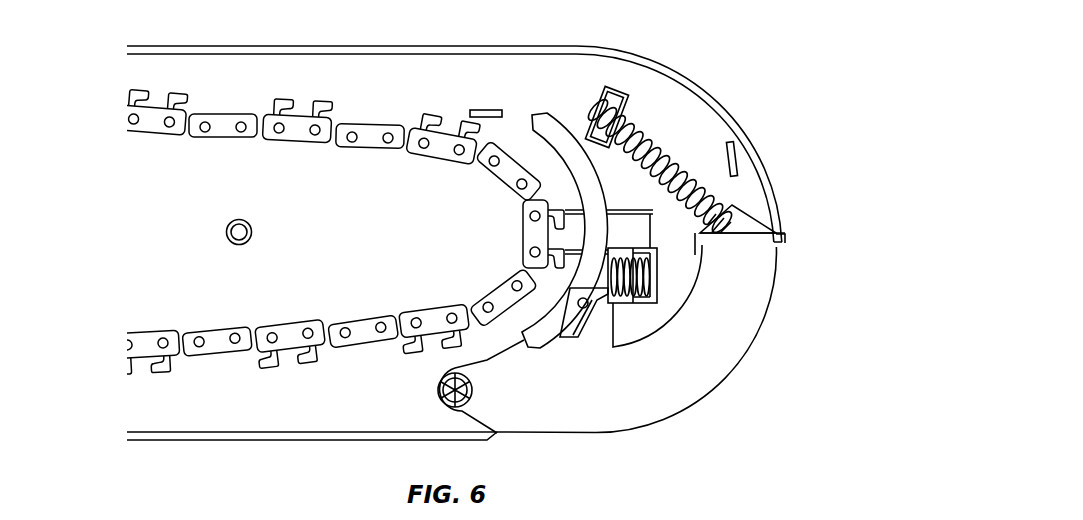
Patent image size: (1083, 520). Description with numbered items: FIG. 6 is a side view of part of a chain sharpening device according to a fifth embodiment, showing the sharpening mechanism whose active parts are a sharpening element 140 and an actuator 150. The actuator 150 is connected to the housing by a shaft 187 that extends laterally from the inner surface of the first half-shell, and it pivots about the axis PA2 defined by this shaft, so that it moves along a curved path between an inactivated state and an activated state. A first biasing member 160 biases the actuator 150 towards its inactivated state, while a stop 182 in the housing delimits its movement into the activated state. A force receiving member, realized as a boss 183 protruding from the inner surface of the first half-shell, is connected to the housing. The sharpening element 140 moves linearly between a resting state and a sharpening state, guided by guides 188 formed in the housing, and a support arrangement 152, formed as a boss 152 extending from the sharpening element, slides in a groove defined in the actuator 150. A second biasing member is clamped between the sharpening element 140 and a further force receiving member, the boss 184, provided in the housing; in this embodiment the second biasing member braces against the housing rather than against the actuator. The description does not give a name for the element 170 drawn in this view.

The sharpening element 140 is at (546, 112).
The actuator 150 is at (742, 245).
The boss 152 is at (590, 302).
The first biasing member 160 is at (648, 137).
The latch spring 170 is at (640, 283).
The stop 182 is at (740, 157).
The force receiving member 183 is at (628, 104).
The force receiving member 184 is at (655, 263).
The shaft 187 is at (472, 393).
The guides 188 is at (655, 213).
The axis PA2 is at (480, 390).